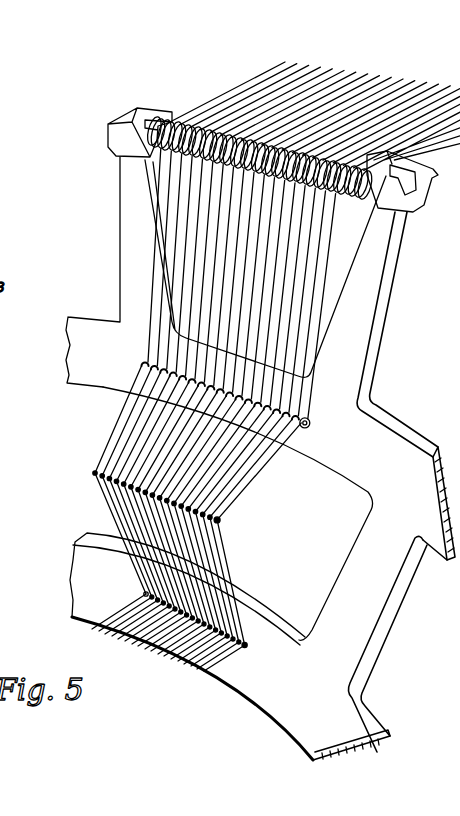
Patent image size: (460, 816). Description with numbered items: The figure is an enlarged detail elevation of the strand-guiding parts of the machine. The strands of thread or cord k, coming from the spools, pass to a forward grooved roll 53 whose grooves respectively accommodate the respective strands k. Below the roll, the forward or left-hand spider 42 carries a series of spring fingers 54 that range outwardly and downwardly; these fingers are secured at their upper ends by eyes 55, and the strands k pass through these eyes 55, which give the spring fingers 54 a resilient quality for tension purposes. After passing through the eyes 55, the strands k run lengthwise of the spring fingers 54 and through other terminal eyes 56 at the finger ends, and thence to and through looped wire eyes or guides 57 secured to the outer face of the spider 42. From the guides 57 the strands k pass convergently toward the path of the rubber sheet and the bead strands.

The forward grooved roll 53 is at (390, 161).
The eyes 55 is at (238, 513).
The spring fingers 54 is at (243, 489).
The terminal eyes 56 is at (220, 519).
The looped wire eyes or guides 57 is at (247, 645).
The forward spider 42 is at (360, 611).
The strands of thread or cord k is at (325, 290).